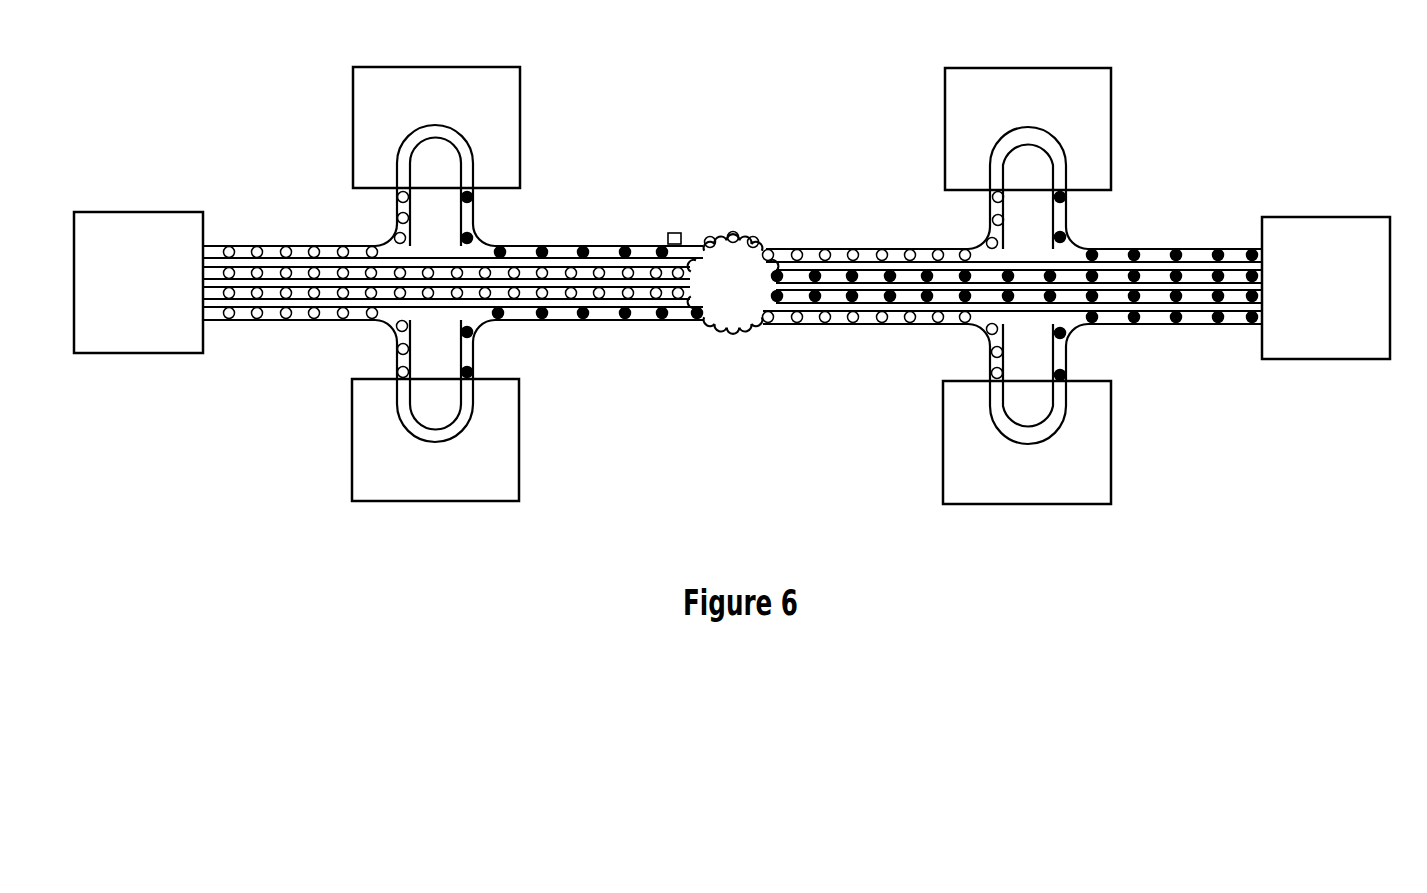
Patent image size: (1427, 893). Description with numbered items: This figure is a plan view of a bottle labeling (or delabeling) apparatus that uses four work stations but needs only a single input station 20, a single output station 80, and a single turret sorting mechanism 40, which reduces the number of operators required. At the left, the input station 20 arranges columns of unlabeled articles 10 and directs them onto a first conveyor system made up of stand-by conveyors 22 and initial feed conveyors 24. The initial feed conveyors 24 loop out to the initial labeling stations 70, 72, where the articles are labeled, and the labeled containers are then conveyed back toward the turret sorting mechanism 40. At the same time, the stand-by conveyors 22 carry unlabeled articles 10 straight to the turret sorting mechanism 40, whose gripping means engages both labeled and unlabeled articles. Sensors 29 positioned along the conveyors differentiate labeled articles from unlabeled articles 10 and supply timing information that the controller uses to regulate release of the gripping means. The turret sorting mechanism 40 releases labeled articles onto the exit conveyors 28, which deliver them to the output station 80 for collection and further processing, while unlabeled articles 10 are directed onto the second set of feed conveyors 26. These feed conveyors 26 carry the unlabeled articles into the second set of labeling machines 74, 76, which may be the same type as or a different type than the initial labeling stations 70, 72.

The unlabeled articles 10 is at (232, 247).
The input station 20 is at (100, 343).
The stand-by conveyors 22 is at (269, 273).
The initial feed conveyors 24 is at (328, 250).
The second set of feed conveyors 26 is at (807, 252).
The exit conveyors 28 is at (902, 279).
The sensors 29 is at (675, 233).
The turret sorting mechanism 40 is at (738, 285).
The initial labeling station 70 is at (502, 97).
The initial labeling station 72 is at (492, 458).
The second labeling machine 74 is at (1103, 102).
The second labeling machine 76 is at (1092, 463).
The output station 80 is at (1325, 228).